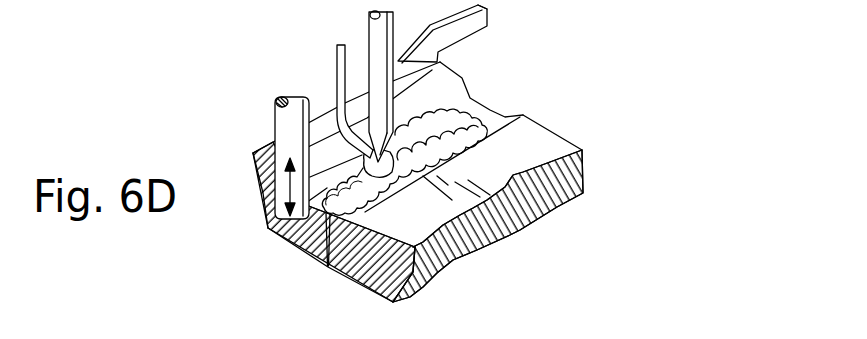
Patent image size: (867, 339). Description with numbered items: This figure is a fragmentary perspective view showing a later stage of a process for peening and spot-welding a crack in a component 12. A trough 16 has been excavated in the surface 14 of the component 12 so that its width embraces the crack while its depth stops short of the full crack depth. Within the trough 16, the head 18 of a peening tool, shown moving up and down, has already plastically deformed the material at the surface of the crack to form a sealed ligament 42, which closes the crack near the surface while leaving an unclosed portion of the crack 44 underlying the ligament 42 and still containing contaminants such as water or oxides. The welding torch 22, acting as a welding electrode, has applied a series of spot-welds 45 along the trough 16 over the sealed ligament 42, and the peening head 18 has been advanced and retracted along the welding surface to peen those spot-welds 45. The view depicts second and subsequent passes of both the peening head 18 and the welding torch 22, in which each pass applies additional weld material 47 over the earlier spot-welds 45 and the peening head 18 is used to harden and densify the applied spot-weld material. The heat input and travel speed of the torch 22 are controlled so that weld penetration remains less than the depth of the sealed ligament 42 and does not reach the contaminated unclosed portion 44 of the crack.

The component 12 is at (436, 183).
The surface 14 is at (553, 147).
The trough 16 is at (463, 97).
The head 18 is at (275, 120).
The welding torch 22 is at (369, 19).
The sealed ligament 42 is at (280, 233).
The unclosed portion of the crack 44 is at (324, 257).
The spot-welds 45 is at (415, 171).
The additional weld material 47 is at (400, 185).